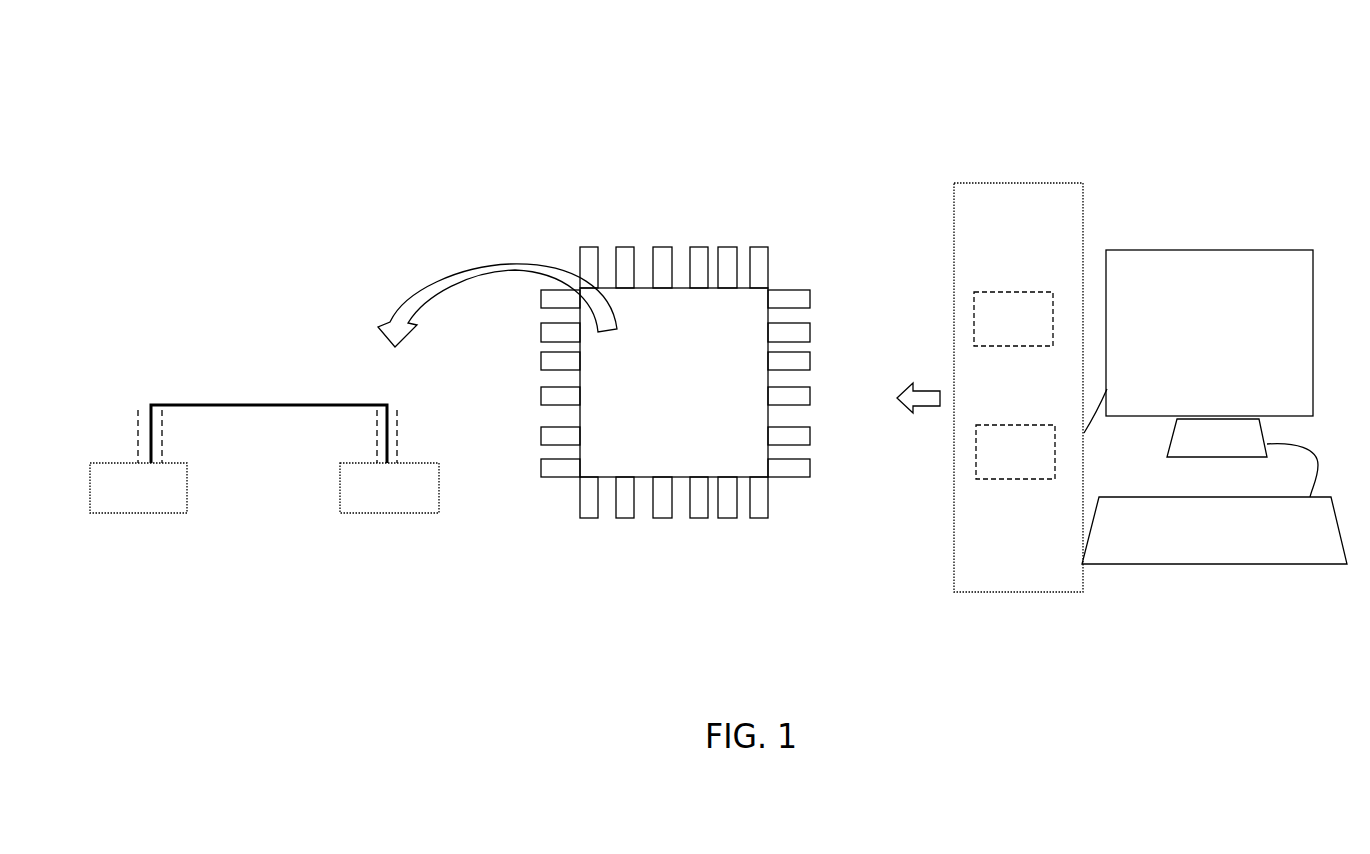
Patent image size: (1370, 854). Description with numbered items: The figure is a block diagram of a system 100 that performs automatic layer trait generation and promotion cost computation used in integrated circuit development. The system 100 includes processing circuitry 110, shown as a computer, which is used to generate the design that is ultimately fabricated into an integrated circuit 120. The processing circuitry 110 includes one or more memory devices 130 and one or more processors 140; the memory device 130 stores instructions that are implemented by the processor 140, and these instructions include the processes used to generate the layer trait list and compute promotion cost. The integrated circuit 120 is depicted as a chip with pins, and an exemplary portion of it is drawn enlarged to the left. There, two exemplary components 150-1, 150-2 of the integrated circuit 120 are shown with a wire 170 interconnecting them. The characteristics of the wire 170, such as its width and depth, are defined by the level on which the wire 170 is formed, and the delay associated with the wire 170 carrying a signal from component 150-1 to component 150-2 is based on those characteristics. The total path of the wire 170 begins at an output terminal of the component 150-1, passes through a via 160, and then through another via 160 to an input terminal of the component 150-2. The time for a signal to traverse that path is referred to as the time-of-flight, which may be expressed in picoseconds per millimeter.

The system 100 is at (1193, 109).
The processing circuitry 110 is at (1218, 201).
The integrated circuit 120 is at (693, 400).
The memory device 130 is at (1013, 319).
The processor 140 is at (1015, 452).
The component 150-1 is at (138, 488).
The component 150-2 is at (389, 488).
The via 160 is at (358, 433).
The wire 170 is at (252, 403).